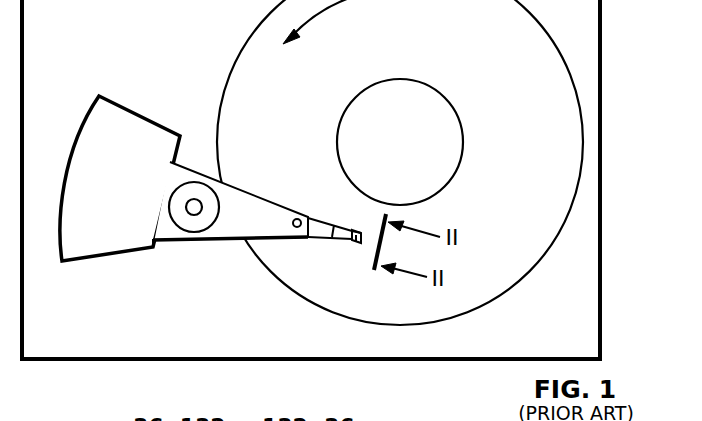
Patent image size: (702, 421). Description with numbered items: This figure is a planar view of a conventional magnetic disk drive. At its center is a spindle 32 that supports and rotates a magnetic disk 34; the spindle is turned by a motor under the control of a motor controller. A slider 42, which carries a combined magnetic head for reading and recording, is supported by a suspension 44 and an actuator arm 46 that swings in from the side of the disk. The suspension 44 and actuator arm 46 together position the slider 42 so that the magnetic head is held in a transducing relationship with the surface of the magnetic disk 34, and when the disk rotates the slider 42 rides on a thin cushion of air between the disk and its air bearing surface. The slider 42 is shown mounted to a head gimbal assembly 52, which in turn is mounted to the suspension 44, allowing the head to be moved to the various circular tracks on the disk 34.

The spindle 32 is at (432, 80).
The magnetic disk 34 is at (491, 142).
The slider 42 is at (358, 244).
The suspension 44 is at (318, 240).
The actuator arm 46 is at (236, 180).
The head gimbal assembly 52 is at (347, 228).